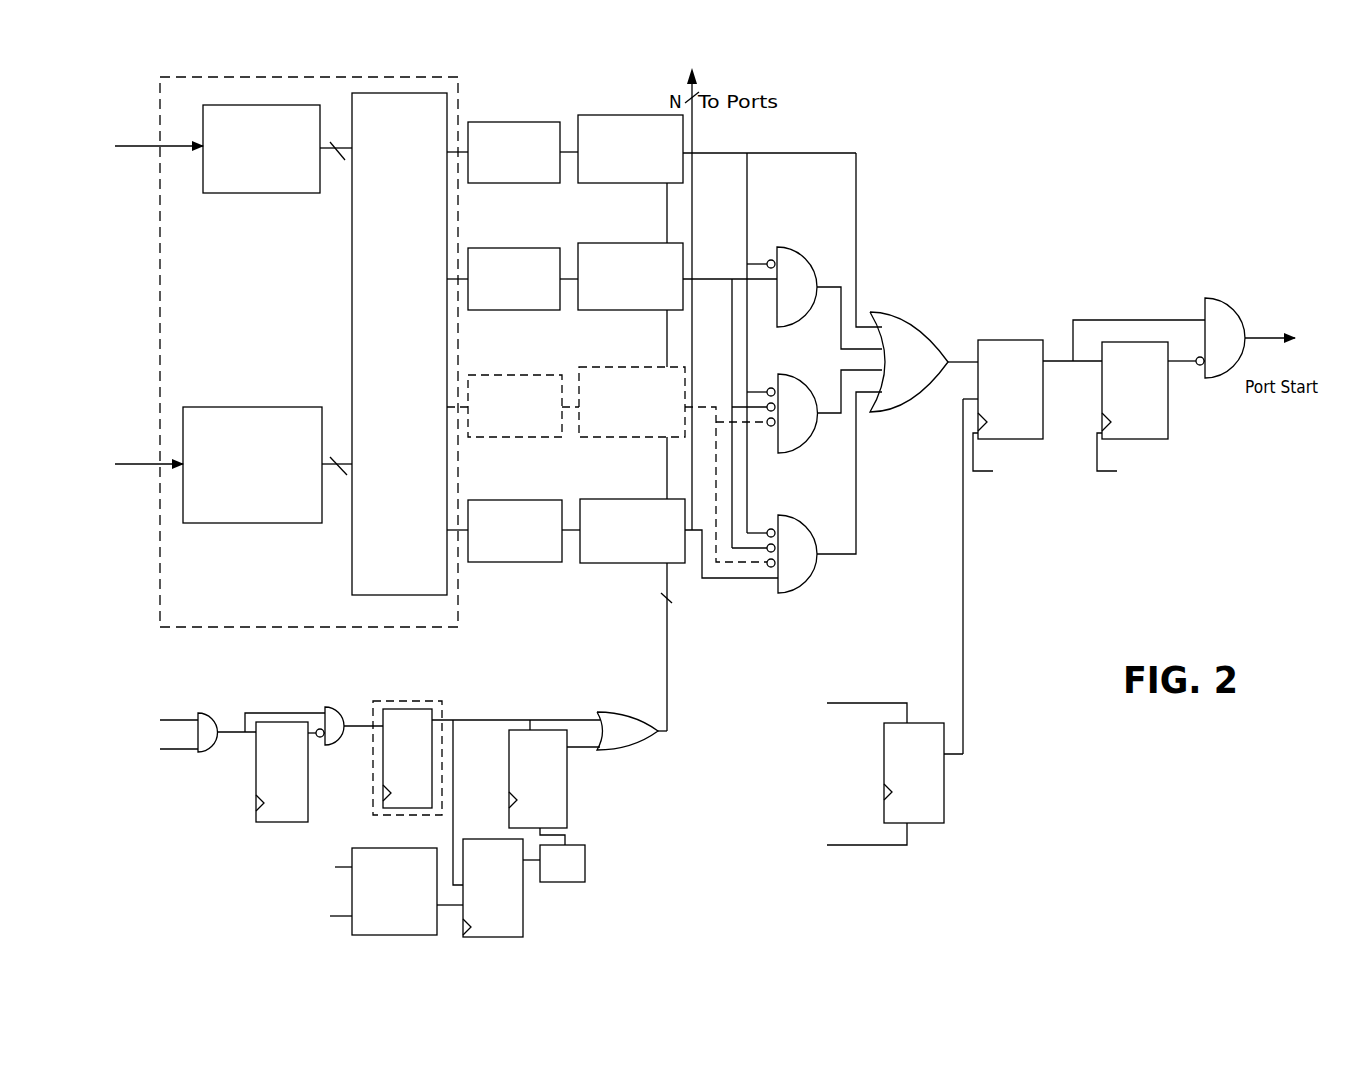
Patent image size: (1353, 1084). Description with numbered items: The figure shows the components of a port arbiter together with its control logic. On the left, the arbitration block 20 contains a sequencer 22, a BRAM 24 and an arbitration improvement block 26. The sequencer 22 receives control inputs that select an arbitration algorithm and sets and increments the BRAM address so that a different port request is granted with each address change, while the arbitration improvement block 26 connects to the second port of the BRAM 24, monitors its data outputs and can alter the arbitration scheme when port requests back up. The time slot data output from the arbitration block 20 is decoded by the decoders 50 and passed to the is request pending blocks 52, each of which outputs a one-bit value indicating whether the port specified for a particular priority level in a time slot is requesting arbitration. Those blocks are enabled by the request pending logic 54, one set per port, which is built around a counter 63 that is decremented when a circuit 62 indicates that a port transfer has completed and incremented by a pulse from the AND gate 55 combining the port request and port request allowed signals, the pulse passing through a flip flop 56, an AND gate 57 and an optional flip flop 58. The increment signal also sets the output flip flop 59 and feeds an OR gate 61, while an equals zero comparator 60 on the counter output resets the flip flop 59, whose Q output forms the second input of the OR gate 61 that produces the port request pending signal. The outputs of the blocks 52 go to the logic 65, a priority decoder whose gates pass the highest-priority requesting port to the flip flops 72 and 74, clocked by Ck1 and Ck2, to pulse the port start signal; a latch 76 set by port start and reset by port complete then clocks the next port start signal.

The arbitration block 20 is at (348, 625).
The sequencer 22 is at (276, 166).
The BRAM 24 is at (412, 370).
The arbitration improvement block 26 is at (267, 511).
The decoders 50 is at (513, 323).
The is request pending blocks 52 is at (631, 402).
The request pending logic 54 is at (686, 790).
The AND gate 55 is at (208, 752).
The flip flop 56 is at (308, 797).
The AND gate 57 is at (333, 707).
The optional flip flop 58 is at (383, 776).
The output flip flop 59 is at (509, 760).
The equals zero comparator 60 is at (585, 863).
The OR gate 61 is at (598, 750).
The circuit 62 is at (418, 848).
The counter 63 is at (523, 915).
The logic 65 is at (694, 576).
The flip flop 72 is at (1040, 440).
The flip flop 74 is at (1168, 440).
The latch 76 is at (884, 768).